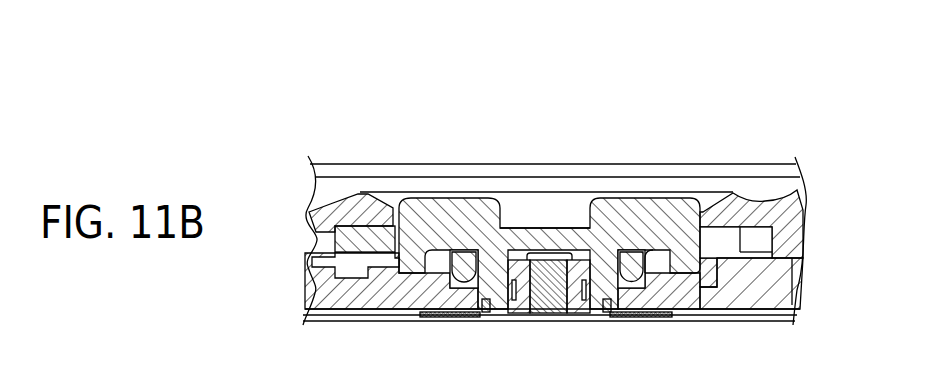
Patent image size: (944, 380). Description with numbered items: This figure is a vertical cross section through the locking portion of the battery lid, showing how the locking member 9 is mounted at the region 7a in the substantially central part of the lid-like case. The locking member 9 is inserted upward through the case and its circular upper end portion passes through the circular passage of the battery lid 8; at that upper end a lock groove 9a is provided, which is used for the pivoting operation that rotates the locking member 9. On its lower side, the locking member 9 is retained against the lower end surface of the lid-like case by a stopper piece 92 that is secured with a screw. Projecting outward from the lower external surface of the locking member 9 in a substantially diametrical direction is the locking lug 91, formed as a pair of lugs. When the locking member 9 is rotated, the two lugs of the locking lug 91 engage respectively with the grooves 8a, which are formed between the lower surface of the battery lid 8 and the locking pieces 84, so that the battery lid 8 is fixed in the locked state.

The lock groove 9a is at (517, 227).
The locking member 9 is at (622, 196).
The locking lug 91 is at (356, 256).
The battery lid 8 is at (780, 202).
The grooves 8a is at (722, 241).
The region 7a is at (349, 290).
The stopper piece 92 is at (455, 317).
The locking pieces 84 is at (757, 293).